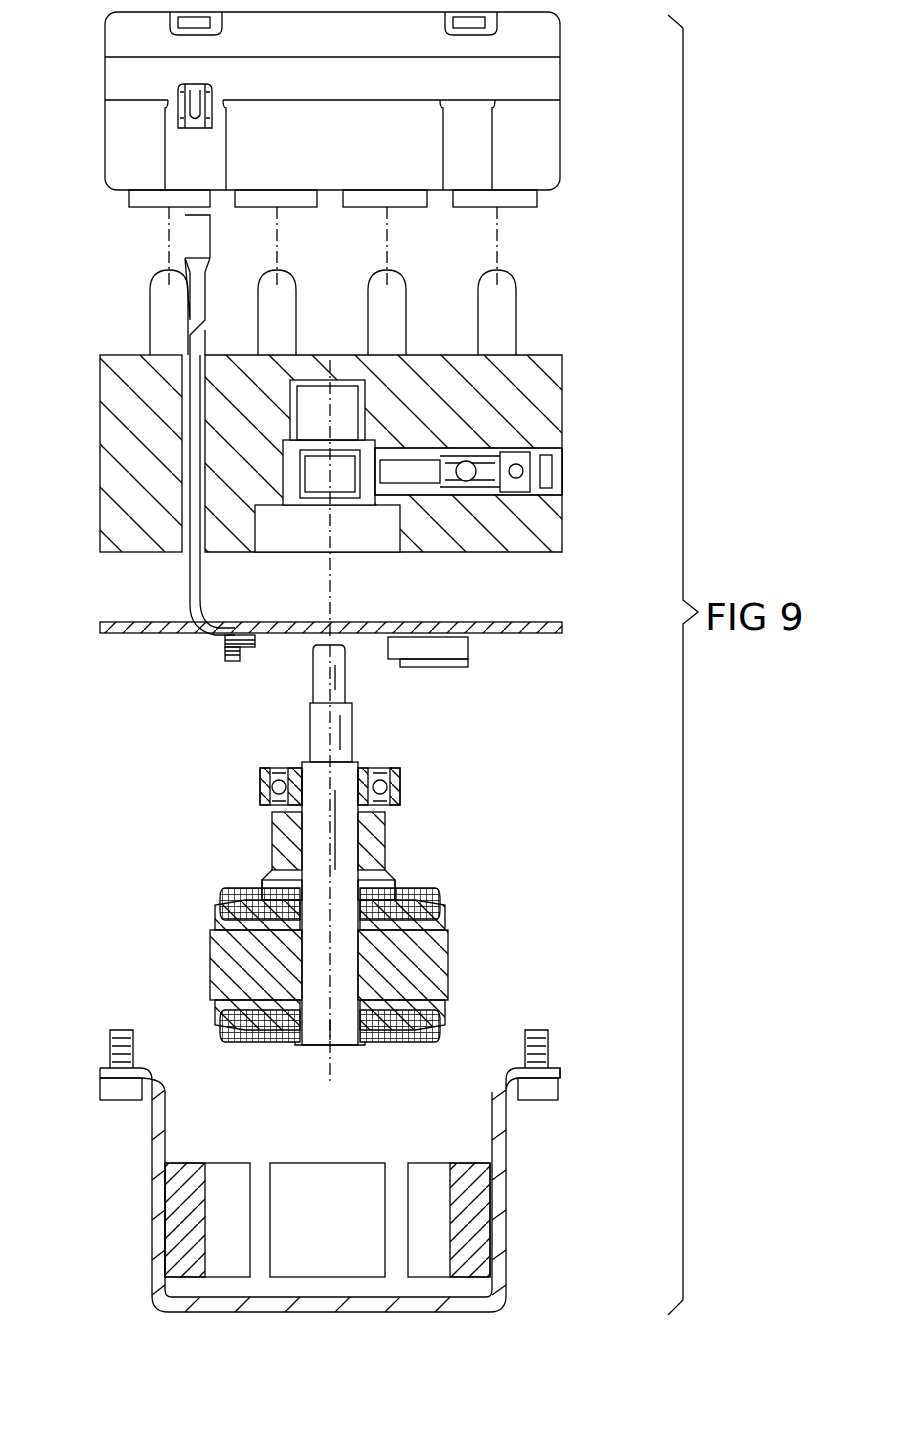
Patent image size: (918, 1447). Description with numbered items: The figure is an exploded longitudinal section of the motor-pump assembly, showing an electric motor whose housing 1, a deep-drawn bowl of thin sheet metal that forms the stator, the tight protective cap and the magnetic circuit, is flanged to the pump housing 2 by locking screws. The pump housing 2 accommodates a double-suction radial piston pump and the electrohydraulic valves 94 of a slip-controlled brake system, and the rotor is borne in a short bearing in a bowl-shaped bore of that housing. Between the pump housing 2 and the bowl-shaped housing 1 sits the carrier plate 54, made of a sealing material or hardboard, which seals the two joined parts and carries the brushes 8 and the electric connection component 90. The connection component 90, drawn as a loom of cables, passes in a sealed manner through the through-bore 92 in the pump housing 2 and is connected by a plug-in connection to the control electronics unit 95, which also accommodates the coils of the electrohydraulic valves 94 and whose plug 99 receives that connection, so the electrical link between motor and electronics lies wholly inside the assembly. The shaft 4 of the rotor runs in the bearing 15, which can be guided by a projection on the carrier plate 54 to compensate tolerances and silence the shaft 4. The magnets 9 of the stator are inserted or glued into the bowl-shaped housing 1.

The housing 1 is at (155, 1215).
The pump housing 2 is at (565, 405).
The shaft 4 is at (340, 848).
The brushes 8 is at (240, 660).
The magnets 9 is at (362, 1175).
The bearing 15 is at (258, 787).
The carrier plate 54 is at (105, 632).
The electric connection component 90 is at (205, 285).
The through-bore 92 is at (185, 548).
The electrohydraulic valves 94 is at (522, 210).
The control electronics unit 95 is at (540, 80).
The plug 99 is at (175, 125).